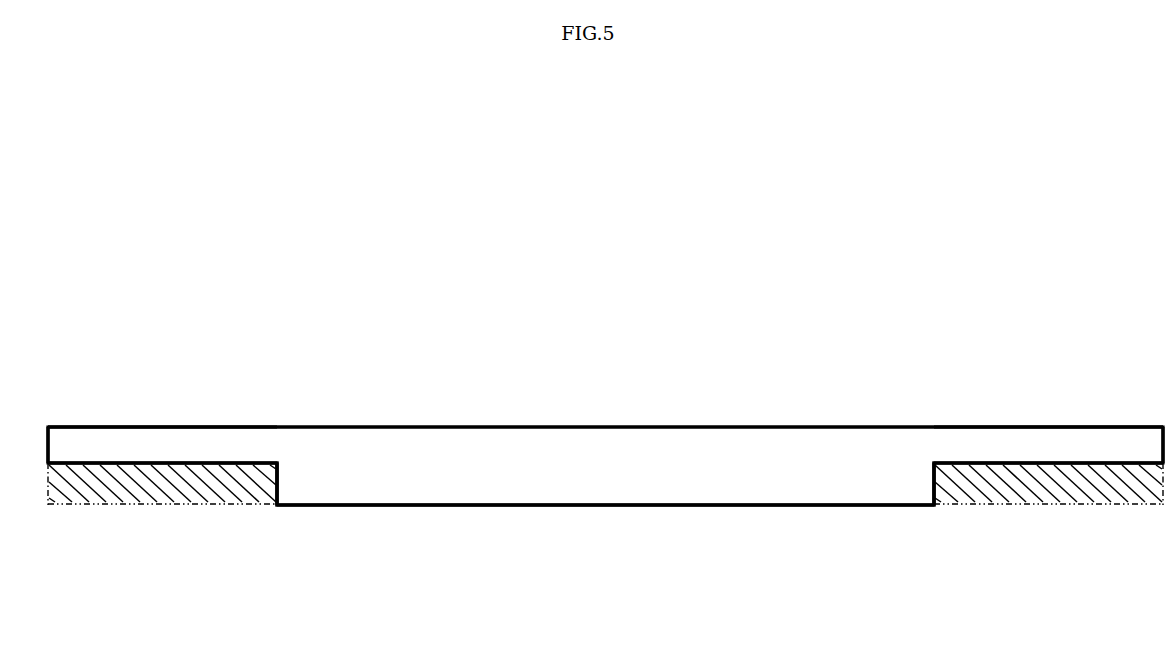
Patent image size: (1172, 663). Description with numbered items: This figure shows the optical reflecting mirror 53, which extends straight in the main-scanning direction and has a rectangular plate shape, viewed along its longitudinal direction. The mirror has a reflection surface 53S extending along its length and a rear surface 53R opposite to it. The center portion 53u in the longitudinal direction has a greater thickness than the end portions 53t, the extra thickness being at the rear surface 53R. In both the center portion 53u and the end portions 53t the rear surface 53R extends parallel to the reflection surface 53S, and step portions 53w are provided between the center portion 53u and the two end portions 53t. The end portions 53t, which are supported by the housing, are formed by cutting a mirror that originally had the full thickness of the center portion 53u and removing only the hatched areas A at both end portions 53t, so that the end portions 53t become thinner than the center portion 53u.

The optical reflecting mirror 53 is at (802, 230).
The reflection surface 53S is at (640, 390).
The rear surface 53R is at (640, 577).
The end portions 53t is at (273, 414).
The center portion 53u is at (931, 522).
The step portions 53w is at (265, 522).
The areas A is at (133, 492).